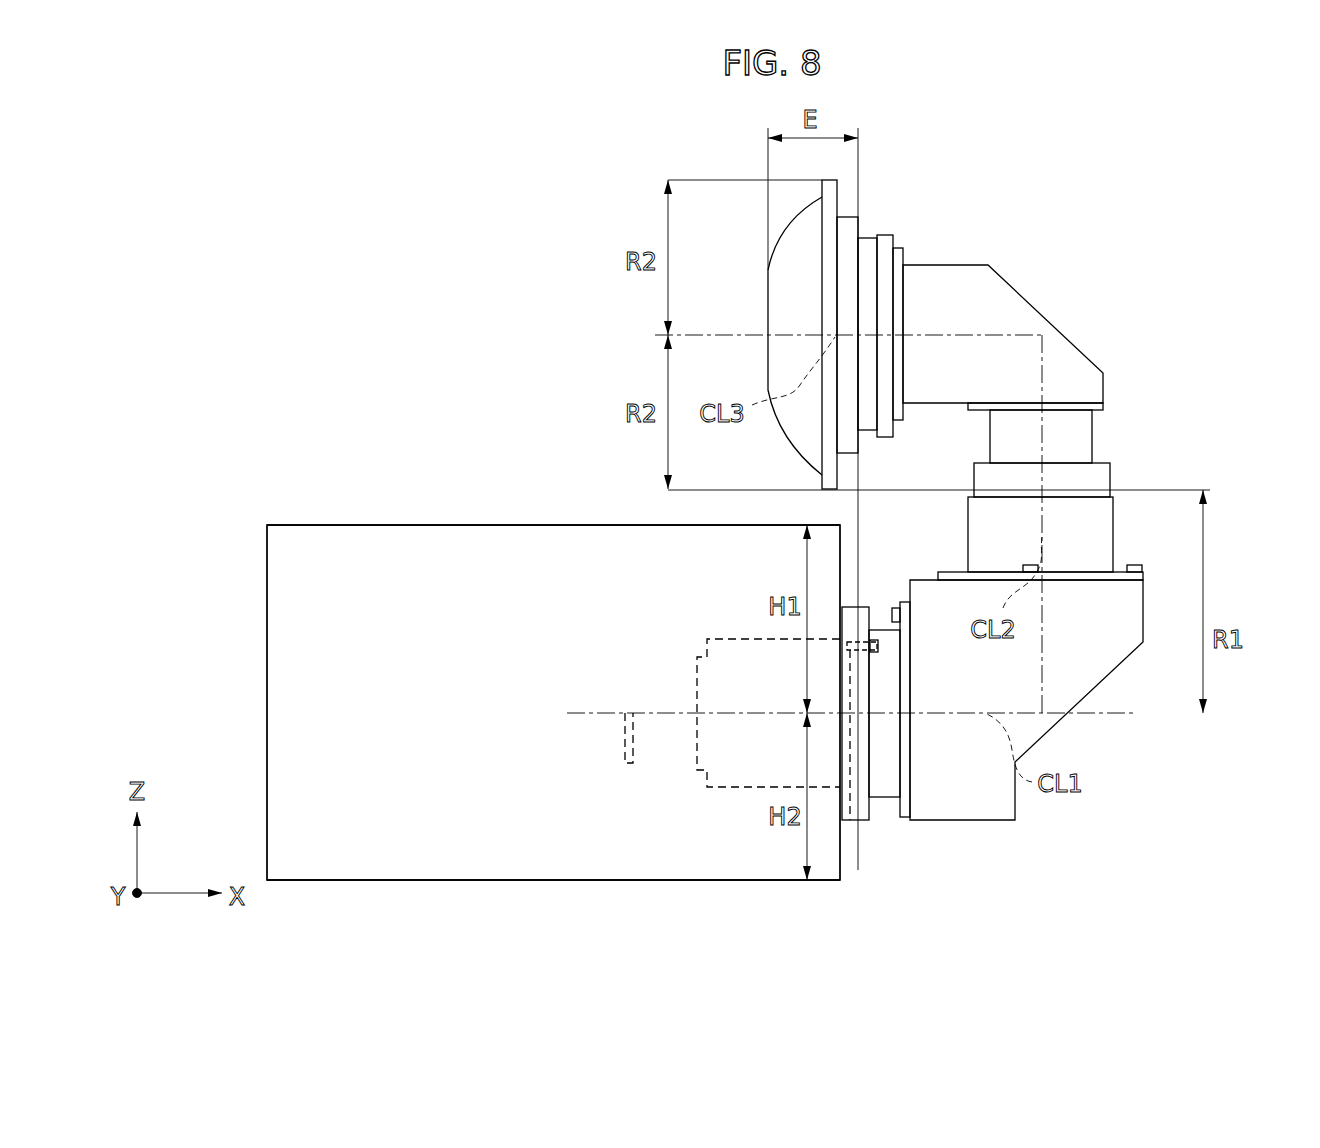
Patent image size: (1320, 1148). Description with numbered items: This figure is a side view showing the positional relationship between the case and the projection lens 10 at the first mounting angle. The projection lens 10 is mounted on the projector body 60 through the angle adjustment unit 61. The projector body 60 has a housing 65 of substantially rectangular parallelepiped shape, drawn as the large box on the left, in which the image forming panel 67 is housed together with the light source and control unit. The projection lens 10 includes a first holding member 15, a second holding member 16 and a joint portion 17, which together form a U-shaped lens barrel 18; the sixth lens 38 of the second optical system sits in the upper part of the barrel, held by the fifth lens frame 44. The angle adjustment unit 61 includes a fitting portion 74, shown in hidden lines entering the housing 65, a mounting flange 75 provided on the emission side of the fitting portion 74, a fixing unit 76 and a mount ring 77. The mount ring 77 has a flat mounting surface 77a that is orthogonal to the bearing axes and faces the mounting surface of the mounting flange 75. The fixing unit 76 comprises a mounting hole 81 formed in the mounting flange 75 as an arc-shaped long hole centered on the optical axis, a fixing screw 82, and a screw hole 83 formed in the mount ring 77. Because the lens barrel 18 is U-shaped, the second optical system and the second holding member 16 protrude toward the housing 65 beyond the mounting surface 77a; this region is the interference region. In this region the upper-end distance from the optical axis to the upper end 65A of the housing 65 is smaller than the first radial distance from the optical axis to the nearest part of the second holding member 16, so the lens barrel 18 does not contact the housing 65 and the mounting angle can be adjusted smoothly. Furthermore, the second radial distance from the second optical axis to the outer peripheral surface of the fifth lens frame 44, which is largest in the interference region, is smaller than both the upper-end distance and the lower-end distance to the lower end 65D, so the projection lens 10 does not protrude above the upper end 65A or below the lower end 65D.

The projection lens 10 is at (963, 222).
The first holding member 15 is at (1040, 724).
The second holding member 16 is at (995, 298).
The joint portion 17 is at (1128, 557).
The lens barrel 18 is at (1240, 863).
The sixth lens 38 is at (777, 314).
The fifth lens frame 44 is at (828, 197).
The projector body 60 is at (290, 552).
The angle adjustment unit 61 is at (968, 880).
The housing 65 is at (387, 537).
The upper end 65A is at (604, 525).
The lower end 65D is at (610, 882).
The image forming panel 67 is at (630, 713).
The fitting portion 74 is at (733, 638).
The mounting flange 75 is at (896, 610).
The fixing unit 76 is at (960, 886).
The mount ring 77 is at (850, 607).
The mounting surface 77a is at (866, 640).
The mounting hole 81 is at (878, 800).
The fixing screw 82 is at (905, 817).
The screw hole 83 is at (851, 822).